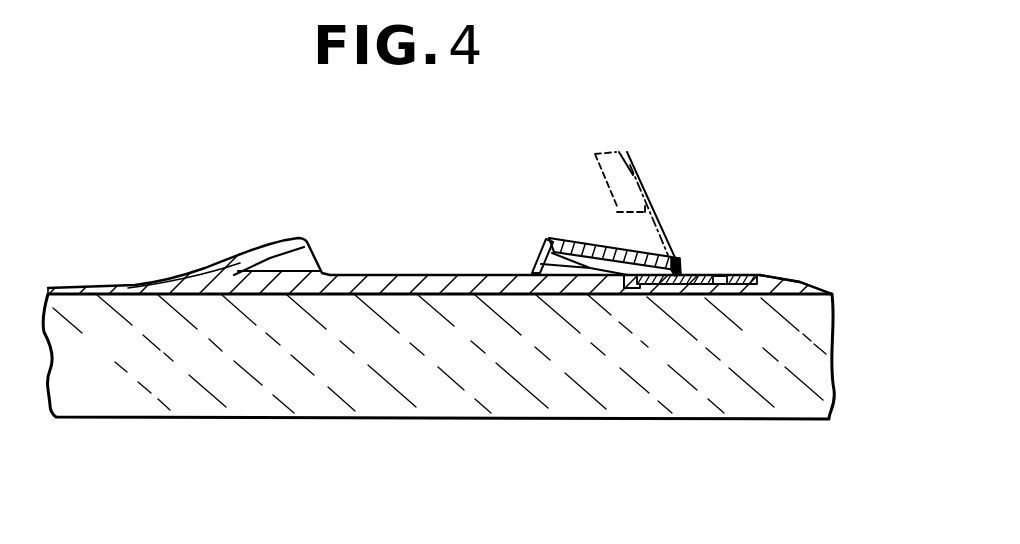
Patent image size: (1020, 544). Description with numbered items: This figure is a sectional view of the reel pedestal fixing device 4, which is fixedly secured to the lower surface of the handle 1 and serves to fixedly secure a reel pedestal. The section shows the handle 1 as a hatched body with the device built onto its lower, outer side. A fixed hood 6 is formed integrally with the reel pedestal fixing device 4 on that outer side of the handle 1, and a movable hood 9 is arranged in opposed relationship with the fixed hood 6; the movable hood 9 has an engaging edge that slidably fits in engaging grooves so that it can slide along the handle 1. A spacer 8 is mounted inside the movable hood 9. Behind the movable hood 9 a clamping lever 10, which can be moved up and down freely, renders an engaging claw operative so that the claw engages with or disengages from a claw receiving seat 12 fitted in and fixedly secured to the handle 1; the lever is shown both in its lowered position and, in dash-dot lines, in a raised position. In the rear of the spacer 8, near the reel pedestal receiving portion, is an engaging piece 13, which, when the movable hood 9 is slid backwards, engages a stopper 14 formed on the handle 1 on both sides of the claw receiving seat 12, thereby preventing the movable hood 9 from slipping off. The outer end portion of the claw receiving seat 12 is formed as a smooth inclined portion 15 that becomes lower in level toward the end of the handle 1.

The handle 1 is at (350, 395).
The reel pedestal fixing device 4 is at (214, 267).
The fixed hood 6 is at (277, 244).
The spacer 8 is at (531, 270).
The movable hood 9 is at (538, 268).
The clamping lever 10 is at (573, 240).
The claw receiving seat 12 is at (707, 274).
The engaging piece 13 is at (527, 273).
The stopper 14 is at (730, 274).
The smooth inclined portion 15 is at (822, 272).